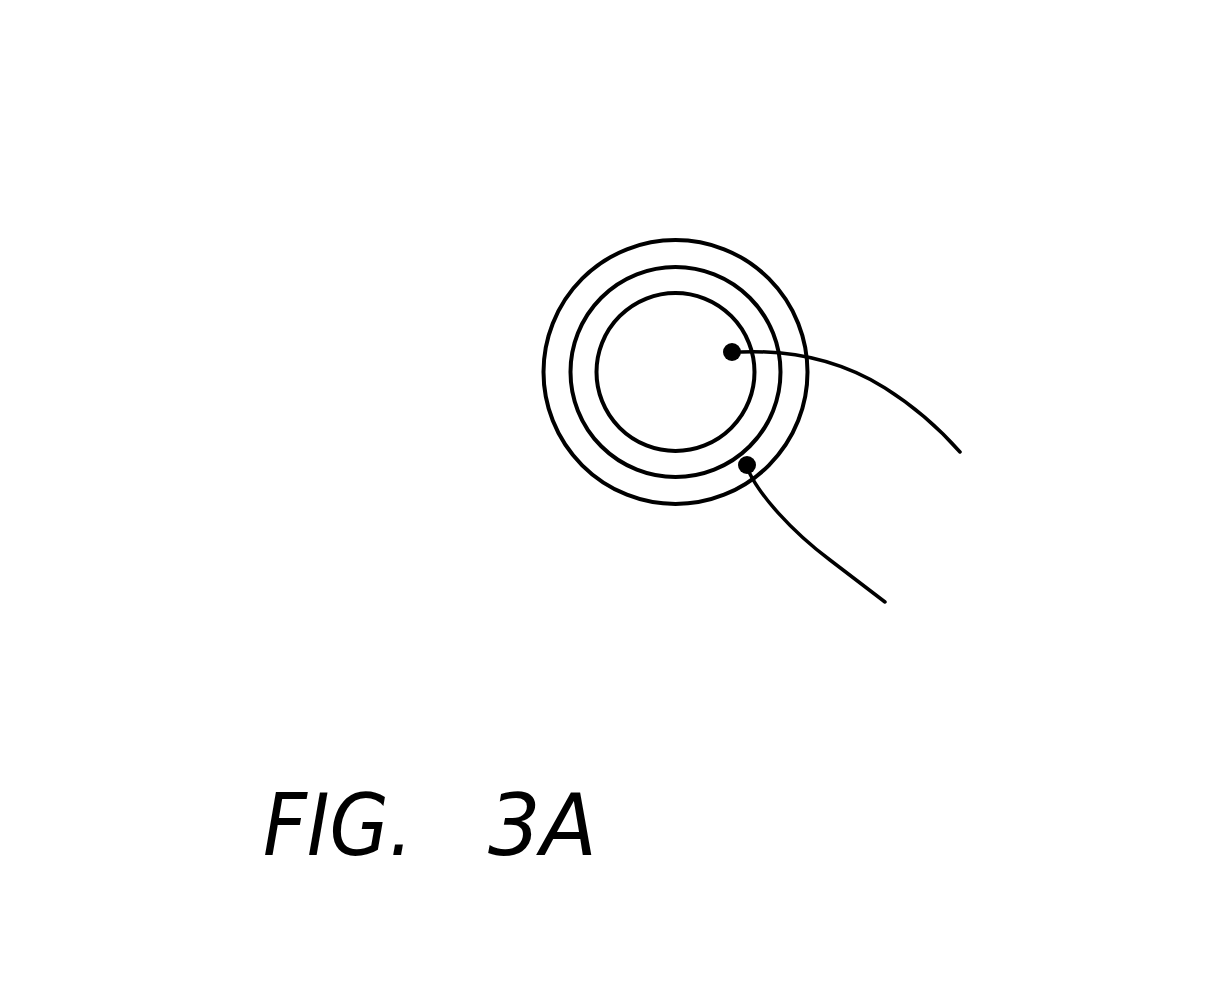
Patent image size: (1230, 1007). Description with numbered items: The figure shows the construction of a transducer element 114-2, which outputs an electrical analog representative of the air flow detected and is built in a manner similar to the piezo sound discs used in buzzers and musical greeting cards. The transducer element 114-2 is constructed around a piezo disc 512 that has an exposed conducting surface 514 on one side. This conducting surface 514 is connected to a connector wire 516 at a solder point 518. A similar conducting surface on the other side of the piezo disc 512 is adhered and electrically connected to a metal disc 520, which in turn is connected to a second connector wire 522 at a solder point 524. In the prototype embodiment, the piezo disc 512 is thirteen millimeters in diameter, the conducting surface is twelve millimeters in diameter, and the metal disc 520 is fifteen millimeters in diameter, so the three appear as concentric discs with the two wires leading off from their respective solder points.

The transducer element 114-2 is at (518, 372).
The piezo disc 512 is at (592, 412).
The conducting surface 514 is at (642, 353).
The connector wire 516 is at (895, 393).
The solder point 518 is at (733, 350).
The metal disc 520 is at (606, 466).
The connector wire 522 is at (848, 575).
The solder point 524 is at (745, 470).